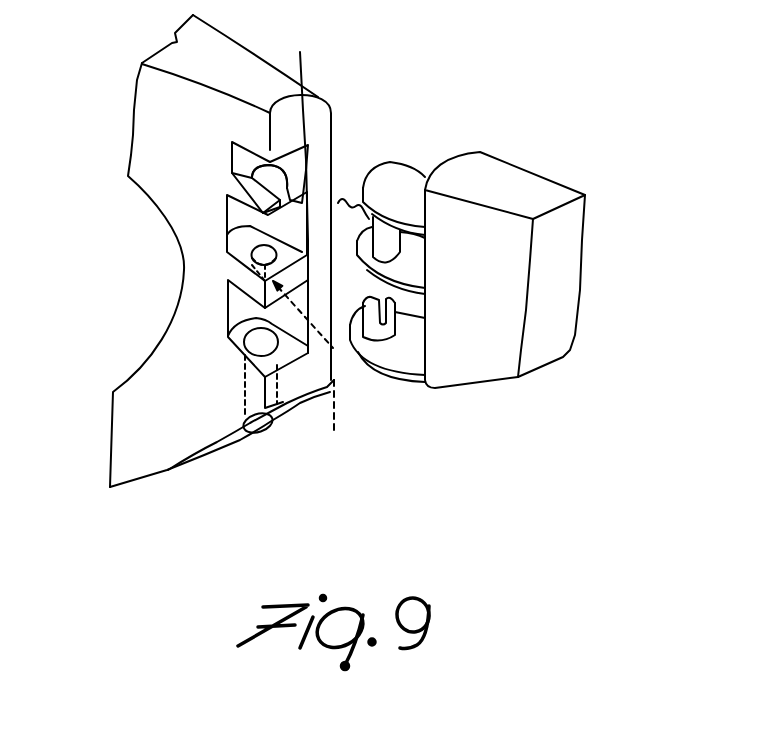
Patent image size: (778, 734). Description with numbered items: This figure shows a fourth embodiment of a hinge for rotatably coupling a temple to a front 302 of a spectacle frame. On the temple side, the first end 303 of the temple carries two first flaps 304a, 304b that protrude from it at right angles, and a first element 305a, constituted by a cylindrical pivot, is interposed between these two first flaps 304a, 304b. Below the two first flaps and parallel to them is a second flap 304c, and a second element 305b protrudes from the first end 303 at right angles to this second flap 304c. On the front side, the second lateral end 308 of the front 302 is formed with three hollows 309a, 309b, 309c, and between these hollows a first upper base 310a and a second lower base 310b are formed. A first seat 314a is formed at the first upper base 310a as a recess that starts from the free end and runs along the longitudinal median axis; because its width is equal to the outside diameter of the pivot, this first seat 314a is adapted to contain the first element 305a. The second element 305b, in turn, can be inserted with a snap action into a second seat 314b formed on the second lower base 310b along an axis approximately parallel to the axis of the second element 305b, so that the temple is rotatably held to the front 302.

The front 302 is at (163, 82).
The first end of the temple 303 is at (463, 148).
The first flap 304a is at (412, 187).
The first flap 304b is at (415, 275).
The second flap 304c is at (388, 353).
The first element 305a is at (407, 250).
The second element 305b is at (408, 330).
The second lateral end of the front 308 is at (317, 119).
The hollow 309a is at (247, 133).
The hollow 309b is at (196, 277).
The hollow 309c is at (290, 410).
The first upper base 310a is at (250, 197).
The second lower base 310b is at (196, 321).
The first seat 314a is at (280, 187).
The second seat 314b is at (297, 444).